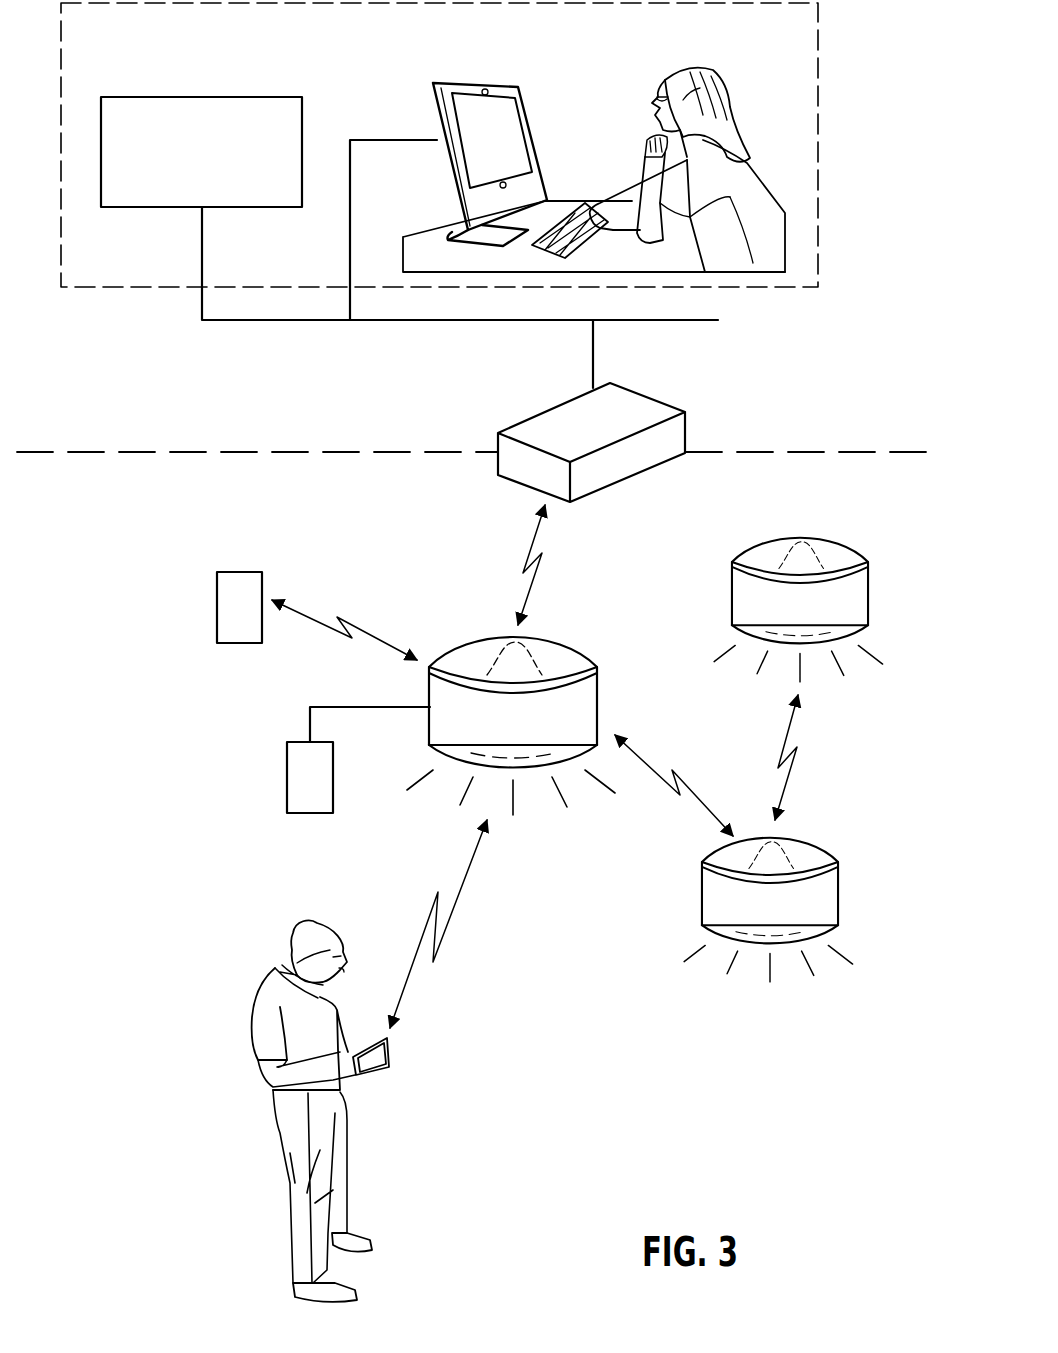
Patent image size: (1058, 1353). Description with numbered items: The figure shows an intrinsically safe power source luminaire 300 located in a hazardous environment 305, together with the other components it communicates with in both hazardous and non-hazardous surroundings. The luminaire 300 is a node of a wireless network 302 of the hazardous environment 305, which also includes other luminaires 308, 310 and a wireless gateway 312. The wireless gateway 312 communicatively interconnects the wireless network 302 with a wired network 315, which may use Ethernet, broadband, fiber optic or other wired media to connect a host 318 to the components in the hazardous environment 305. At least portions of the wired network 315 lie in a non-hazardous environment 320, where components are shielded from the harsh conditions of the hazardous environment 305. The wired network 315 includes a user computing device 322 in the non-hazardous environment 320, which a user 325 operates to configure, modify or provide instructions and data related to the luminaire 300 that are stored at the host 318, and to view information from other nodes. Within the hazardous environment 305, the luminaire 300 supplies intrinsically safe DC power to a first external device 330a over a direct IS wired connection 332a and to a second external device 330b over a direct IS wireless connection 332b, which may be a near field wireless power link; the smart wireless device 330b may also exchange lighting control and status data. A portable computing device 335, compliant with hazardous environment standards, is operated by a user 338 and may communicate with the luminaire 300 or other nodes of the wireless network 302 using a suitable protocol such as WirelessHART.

The intrinsically safe power source luminaire 300 is at (535, 729).
The wireless network 302 is at (860, 750).
The hazardous environment 305 is at (136, 512).
The luminaire 308 is at (870, 587).
The luminaire 310 is at (840, 887).
The wireless gateway 312 is at (657, 400).
The wired network 315 is at (302, 323).
The host 318 is at (251, 96).
The non-hazardous environment 320 is at (380, 39).
The user computing device 322 is at (492, 87).
The user 325 is at (712, 72).
The first external device 330a is at (285, 770).
The second external device 330b is at (215, 600).
The IS wired connection 332a is at (372, 710).
The IS wireless connection 332b is at (375, 632).
The portable computing device 335 is at (391, 1052).
The user 338 is at (256, 1000).